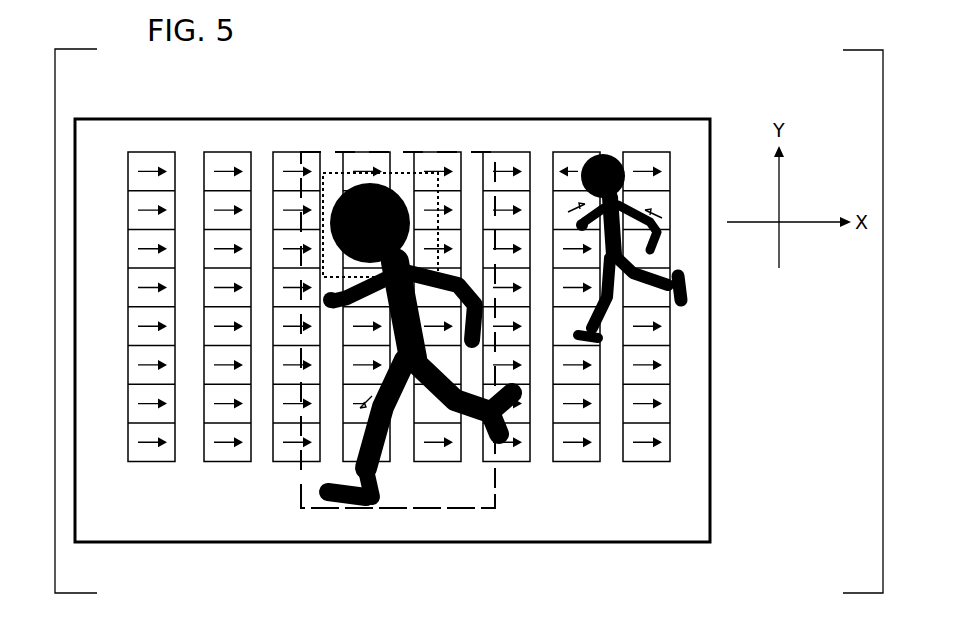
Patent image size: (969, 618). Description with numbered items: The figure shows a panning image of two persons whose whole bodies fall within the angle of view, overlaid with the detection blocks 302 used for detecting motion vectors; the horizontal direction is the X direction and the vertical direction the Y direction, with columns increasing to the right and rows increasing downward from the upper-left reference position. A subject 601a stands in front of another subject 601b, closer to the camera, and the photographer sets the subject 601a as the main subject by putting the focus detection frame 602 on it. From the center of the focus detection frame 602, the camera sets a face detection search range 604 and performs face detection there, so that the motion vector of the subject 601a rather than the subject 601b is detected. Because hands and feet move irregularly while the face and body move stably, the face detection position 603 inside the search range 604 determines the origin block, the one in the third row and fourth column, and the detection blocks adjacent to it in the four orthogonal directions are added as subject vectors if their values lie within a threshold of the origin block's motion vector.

The detection blocks 302 is at (646, 150).
The subject 601a is at (355, 440).
The subject 601b is at (688, 290).
The focus detection frame 602 is at (400, 333).
The face detection position 603 is at (397, 170).
The face detection search range 604 is at (335, 508).